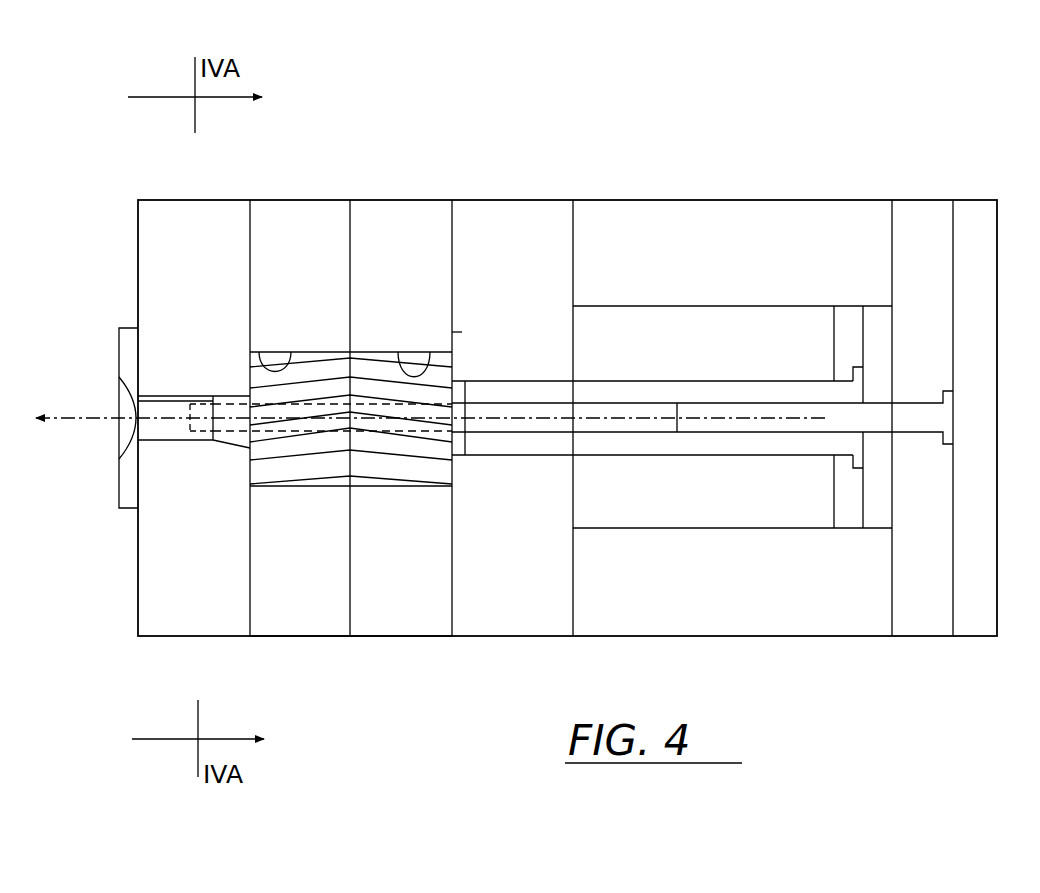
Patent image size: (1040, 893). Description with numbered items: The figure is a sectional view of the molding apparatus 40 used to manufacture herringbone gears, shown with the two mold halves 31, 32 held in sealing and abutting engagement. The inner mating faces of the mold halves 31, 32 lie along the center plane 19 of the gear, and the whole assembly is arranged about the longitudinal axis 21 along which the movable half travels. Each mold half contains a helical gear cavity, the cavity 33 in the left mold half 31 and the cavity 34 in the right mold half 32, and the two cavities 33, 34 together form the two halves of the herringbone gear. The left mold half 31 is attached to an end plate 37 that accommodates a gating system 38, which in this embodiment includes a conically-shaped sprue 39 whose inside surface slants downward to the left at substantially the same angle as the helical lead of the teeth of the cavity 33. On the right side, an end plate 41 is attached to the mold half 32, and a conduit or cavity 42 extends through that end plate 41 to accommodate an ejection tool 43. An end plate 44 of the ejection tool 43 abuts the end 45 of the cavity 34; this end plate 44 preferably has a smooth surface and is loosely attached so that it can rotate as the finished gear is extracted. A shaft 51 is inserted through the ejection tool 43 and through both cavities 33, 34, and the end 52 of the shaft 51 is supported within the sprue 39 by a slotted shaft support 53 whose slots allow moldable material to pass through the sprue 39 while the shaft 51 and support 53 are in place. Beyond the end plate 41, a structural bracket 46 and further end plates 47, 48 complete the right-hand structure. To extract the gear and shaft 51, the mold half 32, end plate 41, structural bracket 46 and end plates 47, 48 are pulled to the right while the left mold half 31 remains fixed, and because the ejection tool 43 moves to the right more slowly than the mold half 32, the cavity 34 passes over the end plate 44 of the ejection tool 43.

The center plane 19 is at (351, 197).
The longitudinal axis 21 is at (78, 422).
The mold half 31 is at (318, 637).
The mold half 32 is at (397, 637).
The cavity 33 is at (281, 368).
The cavity 34 is at (410, 375).
The end plate 37 is at (163, 200).
The gating system 38 is at (116, 387).
The conically-shaped sprue 39 is at (238, 433).
The apparatus 40 is at (602, 130).
The end plate 41 is at (480, 200).
The conduit or cavity 42 is at (493, 455).
The ejection tool 43 is at (498, 376).
The end plate 44 is at (462, 381).
The end 45 is at (455, 332).
The structural bracket 46 is at (683, 200).
The end plate 47 is at (908, 200).
The end plate 48 is at (973, 200).
The shaft 51 is at (232, 396).
The end 52 is at (188, 404).
The slotted shaft support 53 is at (170, 393).